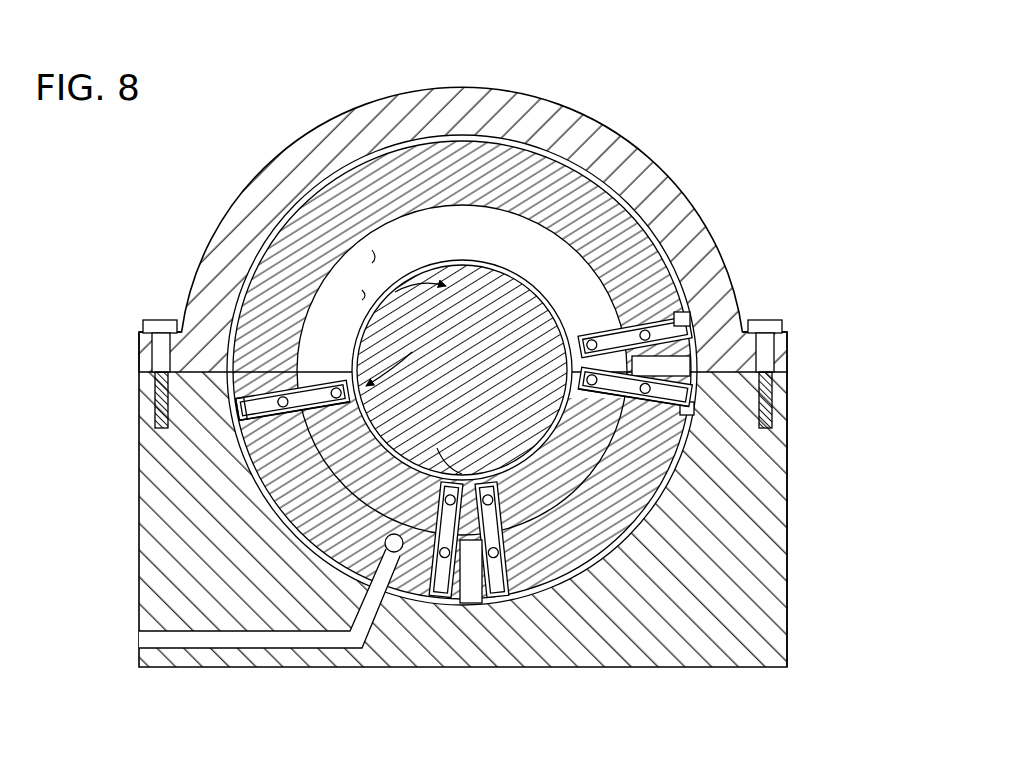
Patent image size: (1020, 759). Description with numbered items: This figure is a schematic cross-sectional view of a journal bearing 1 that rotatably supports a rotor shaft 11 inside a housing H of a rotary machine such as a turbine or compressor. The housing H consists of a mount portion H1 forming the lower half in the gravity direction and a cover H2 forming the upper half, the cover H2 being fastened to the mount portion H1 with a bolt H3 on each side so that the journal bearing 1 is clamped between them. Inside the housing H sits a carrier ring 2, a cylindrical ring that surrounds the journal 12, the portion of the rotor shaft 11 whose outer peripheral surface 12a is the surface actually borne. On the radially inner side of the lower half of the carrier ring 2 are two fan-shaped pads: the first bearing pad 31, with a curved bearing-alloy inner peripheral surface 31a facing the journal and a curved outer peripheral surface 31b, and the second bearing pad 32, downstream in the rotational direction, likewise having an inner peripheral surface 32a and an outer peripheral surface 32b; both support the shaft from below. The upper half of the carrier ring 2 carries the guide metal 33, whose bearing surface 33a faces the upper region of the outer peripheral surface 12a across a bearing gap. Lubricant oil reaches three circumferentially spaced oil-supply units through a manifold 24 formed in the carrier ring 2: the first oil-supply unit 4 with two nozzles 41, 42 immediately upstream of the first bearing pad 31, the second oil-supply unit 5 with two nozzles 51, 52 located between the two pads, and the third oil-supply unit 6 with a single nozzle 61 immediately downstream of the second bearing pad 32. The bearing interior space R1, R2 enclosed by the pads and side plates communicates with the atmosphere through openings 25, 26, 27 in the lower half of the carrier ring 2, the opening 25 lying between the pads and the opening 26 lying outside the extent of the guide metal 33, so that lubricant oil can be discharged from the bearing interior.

The journal bearing 1 is at (560, 140).
The carrier ring 2 is at (583, 165).
The first oil-supply unit 4 is at (560, 366).
The second oil-supply unit 5 is at (468, 565).
The third oil-supply unit 6 is at (394, 360).
The rotor shaft 11 is at (513, 268).
The journal 12 is at (462, 370).
The outer peripheral surface of the journal 12a is at (473, 262).
The manifold 24 is at (745, 432).
The opening 25 is at (465, 607).
The opening 26 is at (778, 347).
The opening 27 is at (180, 328).
The first bearing pad 31 is at (694, 400).
The inner peripheral surface of the first bearing pad 31a is at (547, 437).
The outer peripheral surface of the first bearing pad 31b is at (685, 415).
The second bearing pad 32 is at (243, 412).
The inner peripheral surface of the second bearing pad 32a is at (400, 448).
The outer peripheral surface of the second bearing pad 32b is at (272, 438).
The guide metal 33 is at (375, 255).
The bearing surface 33a is at (364, 292).
The nozzle 41 is at (695, 323).
The nozzle 42 is at (705, 344).
The nozzle 51 is at (507, 600).
The nozzle 52 is at (422, 600).
The nozzle 61 is at (238, 393).
The housing H is at (872, 338).
The mount portion H1 is at (780, 398).
The cover H2 is at (780, 348).
The bolt H3 is at (160, 320).
The bearing interior space R1 is at (440, 449).
The bearing interior space R2 is at (436, 309).